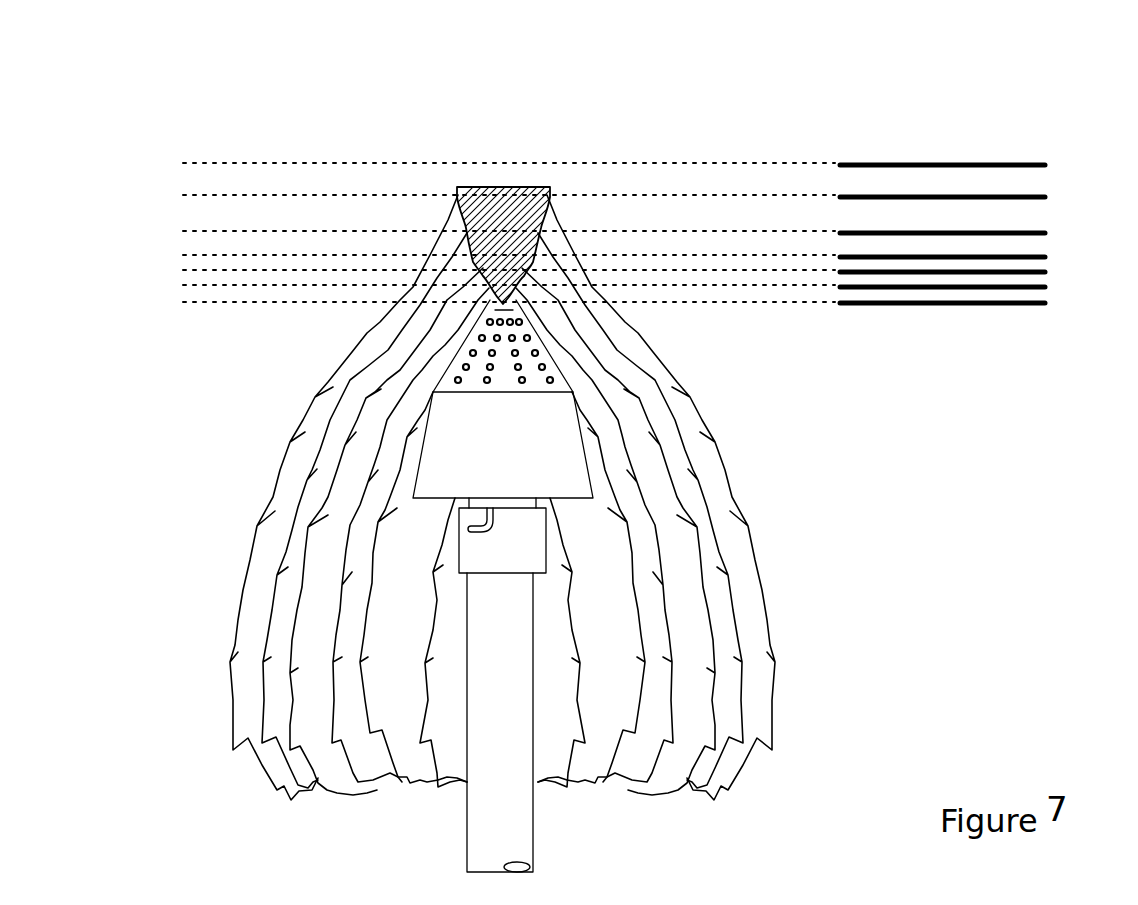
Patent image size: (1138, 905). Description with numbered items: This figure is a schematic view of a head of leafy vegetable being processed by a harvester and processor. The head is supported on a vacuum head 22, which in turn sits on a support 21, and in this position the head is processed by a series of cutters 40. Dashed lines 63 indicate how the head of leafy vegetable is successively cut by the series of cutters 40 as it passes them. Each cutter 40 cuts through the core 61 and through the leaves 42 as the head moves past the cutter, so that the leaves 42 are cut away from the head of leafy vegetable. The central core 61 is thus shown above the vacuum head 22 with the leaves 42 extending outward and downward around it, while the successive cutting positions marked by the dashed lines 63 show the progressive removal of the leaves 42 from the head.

The core 61 is at (513, 212).
The dashed lines 63 is at (265, 160).
The cutters 40 is at (1038, 124).
The vacuum head 22 is at (547, 457).
The support 21 is at (533, 835).
The leaves 42 is at (285, 620).